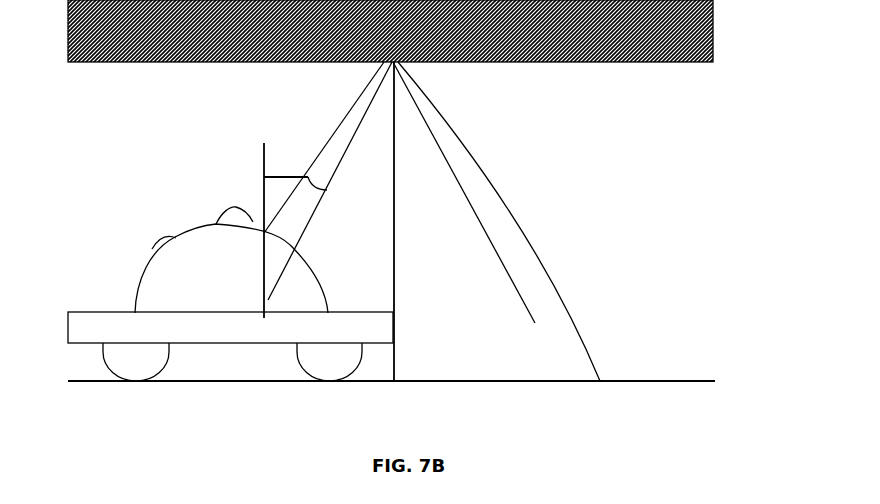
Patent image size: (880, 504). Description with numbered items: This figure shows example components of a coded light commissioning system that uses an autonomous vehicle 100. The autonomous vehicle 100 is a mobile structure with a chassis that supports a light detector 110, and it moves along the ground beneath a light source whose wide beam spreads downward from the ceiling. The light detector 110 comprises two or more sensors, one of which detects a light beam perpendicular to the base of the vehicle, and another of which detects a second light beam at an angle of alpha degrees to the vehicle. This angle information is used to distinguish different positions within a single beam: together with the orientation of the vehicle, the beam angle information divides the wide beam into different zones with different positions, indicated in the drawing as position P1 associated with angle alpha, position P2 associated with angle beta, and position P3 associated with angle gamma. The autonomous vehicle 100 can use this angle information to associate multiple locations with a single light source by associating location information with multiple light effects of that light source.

The autonomous vehicle 100 is at (226, 281).
The light detector 110 is at (221, 203).
The first position of robot (angle alpha) P1 is at (275, 241).
The second position of robot (angle beta) P2 is at (400, 221).
The third position of robot (angle gamma) P3 is at (478, 209).